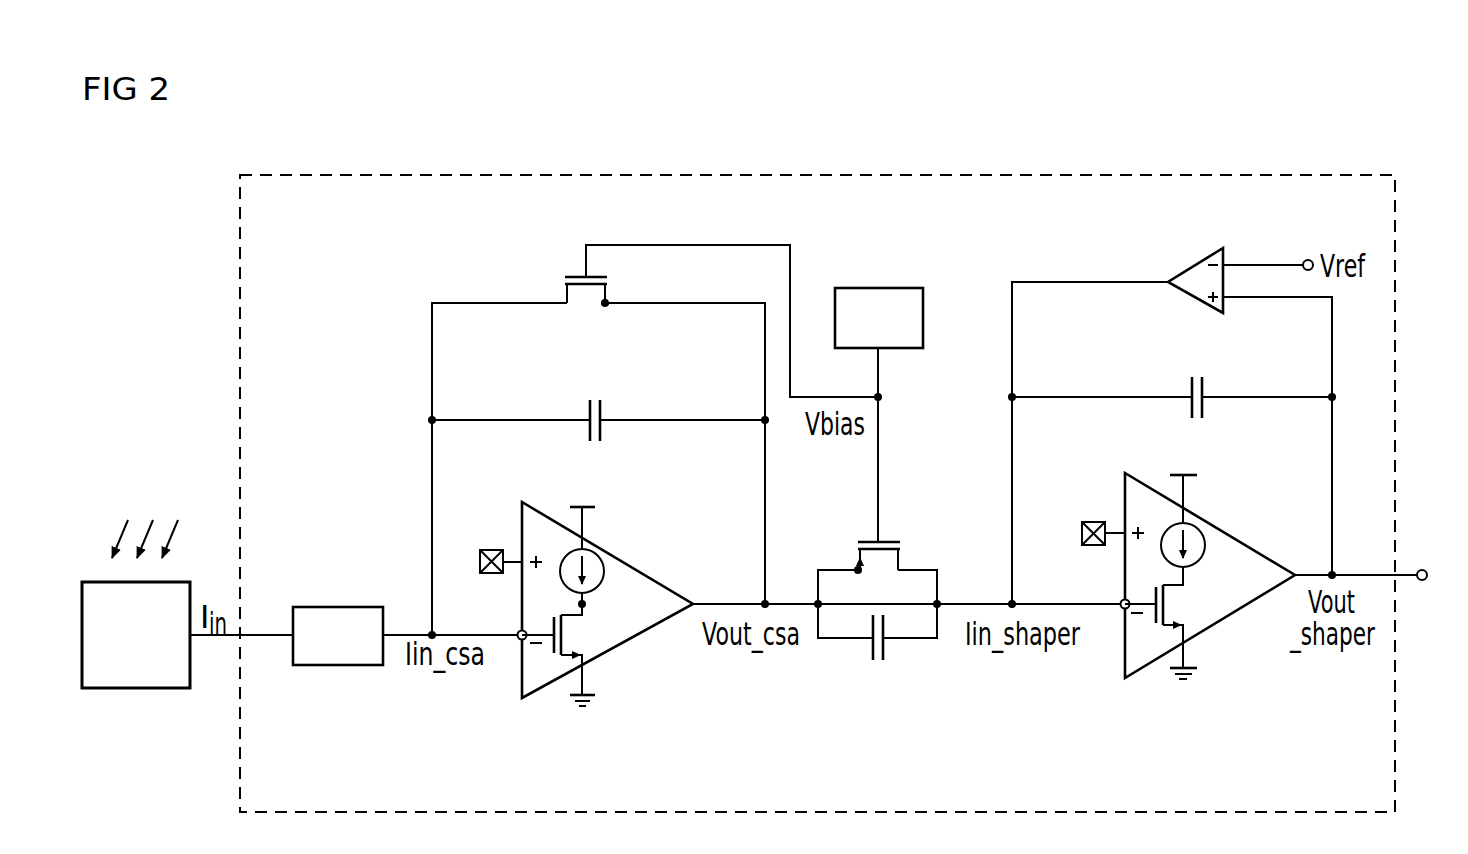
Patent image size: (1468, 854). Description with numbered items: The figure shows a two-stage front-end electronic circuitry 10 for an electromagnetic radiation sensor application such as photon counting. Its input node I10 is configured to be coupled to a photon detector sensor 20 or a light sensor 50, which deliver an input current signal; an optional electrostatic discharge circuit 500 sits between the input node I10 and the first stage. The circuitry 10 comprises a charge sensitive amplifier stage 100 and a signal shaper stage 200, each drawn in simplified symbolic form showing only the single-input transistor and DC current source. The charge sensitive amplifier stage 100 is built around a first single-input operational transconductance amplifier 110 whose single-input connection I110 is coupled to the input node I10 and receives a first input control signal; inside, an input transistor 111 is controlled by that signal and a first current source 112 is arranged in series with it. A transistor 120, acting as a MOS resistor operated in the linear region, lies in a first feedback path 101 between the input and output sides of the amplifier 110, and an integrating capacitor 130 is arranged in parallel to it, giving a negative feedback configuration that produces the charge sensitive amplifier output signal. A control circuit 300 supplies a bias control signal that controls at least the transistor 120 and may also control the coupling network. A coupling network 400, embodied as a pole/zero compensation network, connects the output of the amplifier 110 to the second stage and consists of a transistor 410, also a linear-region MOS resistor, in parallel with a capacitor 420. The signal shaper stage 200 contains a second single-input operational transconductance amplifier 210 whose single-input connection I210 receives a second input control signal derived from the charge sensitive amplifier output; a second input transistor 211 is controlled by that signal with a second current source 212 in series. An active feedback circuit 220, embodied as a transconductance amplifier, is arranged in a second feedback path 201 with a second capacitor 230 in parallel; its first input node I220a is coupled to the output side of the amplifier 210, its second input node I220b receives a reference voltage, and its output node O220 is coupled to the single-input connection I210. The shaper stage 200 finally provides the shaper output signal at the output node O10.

The front-end electronic circuitry 10 is at (822, 175).
The photon detector sensor 20 is at (135, 690).
The light sensor 50 is at (136, 635).
The input node I10 is at (282, 640).
The electrostatic discharge circuit 500 is at (340, 607).
The charge sensitive amplifier stage 100 is at (586, 634).
The first feedback path 101 is at (500, 303).
The first single-input operational transconductance amplifier 110 is at (612, 655).
The input transistor 111 is at (576, 636).
The first current source 112 is at (620, 537).
The transistor 120 is at (575, 276).
The capacitor 130 is at (590, 405).
The single-input connection I110 is at (517, 631).
The control circuit 300 is at (880, 288).
The coupling network 400 is at (848, 619).
The transistor 410 is at (888, 542).
The capacitor 420 is at (878, 662).
The signal shaper stage 200 is at (1188, 607).
The second feedback path 201 is at (1044, 282).
The second single-input operational transconductance amplifier 210 is at (1212, 628).
The second input transistor 211 is at (1178, 606).
The second current source 212 is at (1197, 524).
The active feedback circuit 220 is at (1193, 263).
The second capacitor 230 is at (1190, 383).
The single-input connection I210 is at (1119, 600).
The first input node I220a is at (1265, 298).
The second input node I220b is at (1266, 264).
The output node O220 is at (1114, 282).
The output node O10 is at (1424, 570).